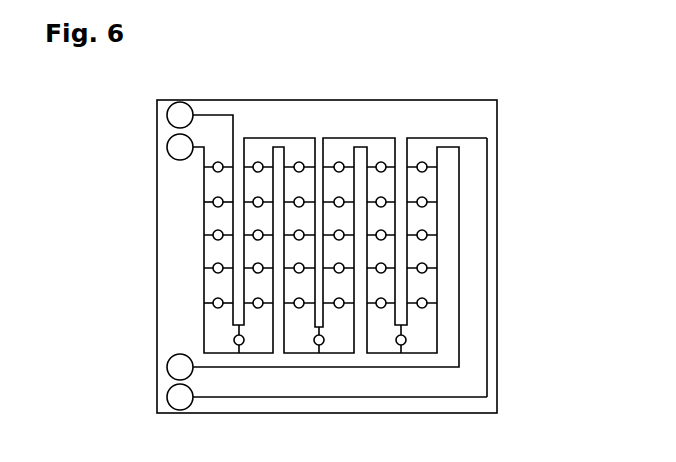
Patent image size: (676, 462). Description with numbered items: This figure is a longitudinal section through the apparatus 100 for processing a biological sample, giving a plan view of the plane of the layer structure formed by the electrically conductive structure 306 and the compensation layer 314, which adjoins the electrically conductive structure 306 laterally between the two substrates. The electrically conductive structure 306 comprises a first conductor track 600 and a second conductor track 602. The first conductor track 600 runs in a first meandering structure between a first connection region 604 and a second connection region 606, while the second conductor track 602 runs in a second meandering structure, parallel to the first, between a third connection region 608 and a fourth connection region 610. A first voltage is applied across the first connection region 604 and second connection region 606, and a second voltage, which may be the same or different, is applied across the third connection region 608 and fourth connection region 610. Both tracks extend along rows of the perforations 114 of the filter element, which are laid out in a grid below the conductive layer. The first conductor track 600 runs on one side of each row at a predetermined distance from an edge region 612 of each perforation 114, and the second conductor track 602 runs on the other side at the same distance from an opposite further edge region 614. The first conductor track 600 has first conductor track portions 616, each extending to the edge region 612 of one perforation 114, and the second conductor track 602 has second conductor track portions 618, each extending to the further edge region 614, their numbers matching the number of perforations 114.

The apparatus 100 is at (328, 97).
The perforations 114 is at (433, 236).
The electrically conductive structure 306 is at (468, 372).
The compensation layer 314 is at (490, 339).
The first conductor track 600 is at (487, 144).
The second conductor track 602 is at (460, 181).
The first connection region 604 is at (168, 116).
The second connection region 606 is at (168, 399).
The third connection region 608 is at (168, 150).
The fourth connection region 610 is at (168, 369).
The edge region 612 is at (230, 200).
The further edge region 614 is at (212, 205).
The first conductor track portions 616 is at (228, 308).
The second conductor track portions 618 is at (213, 301).